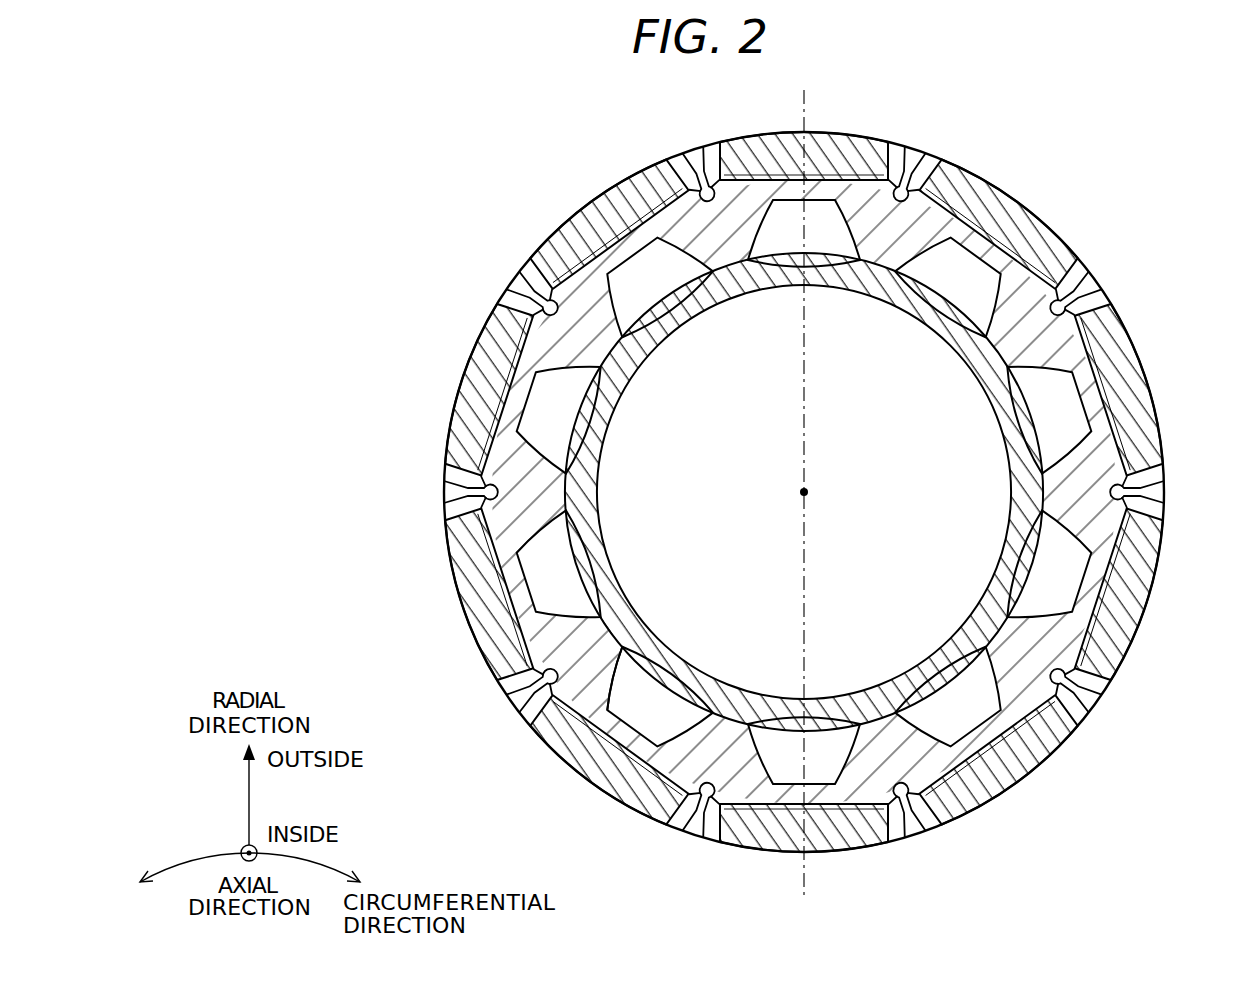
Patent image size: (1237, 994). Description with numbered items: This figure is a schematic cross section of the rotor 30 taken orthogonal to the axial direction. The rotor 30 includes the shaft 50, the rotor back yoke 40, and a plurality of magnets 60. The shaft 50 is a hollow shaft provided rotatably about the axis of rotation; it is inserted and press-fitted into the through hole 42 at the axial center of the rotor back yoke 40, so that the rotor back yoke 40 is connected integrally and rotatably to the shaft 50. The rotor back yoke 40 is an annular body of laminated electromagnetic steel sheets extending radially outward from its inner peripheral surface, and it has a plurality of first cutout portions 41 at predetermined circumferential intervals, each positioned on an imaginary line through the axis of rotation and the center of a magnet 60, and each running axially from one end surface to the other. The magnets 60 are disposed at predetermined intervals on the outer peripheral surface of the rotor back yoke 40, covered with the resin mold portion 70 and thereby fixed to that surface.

The rotor 30 is at (540, 179).
The rotor back yoke 40 is at (1060, 493).
The first cutout portion 41 is at (809, 242).
The through hole 42 is at (699, 684).
The shaft 50 is at (617, 386).
The magnet 60 is at (801, 514).
The resin mold portion 70 is at (800, 516).